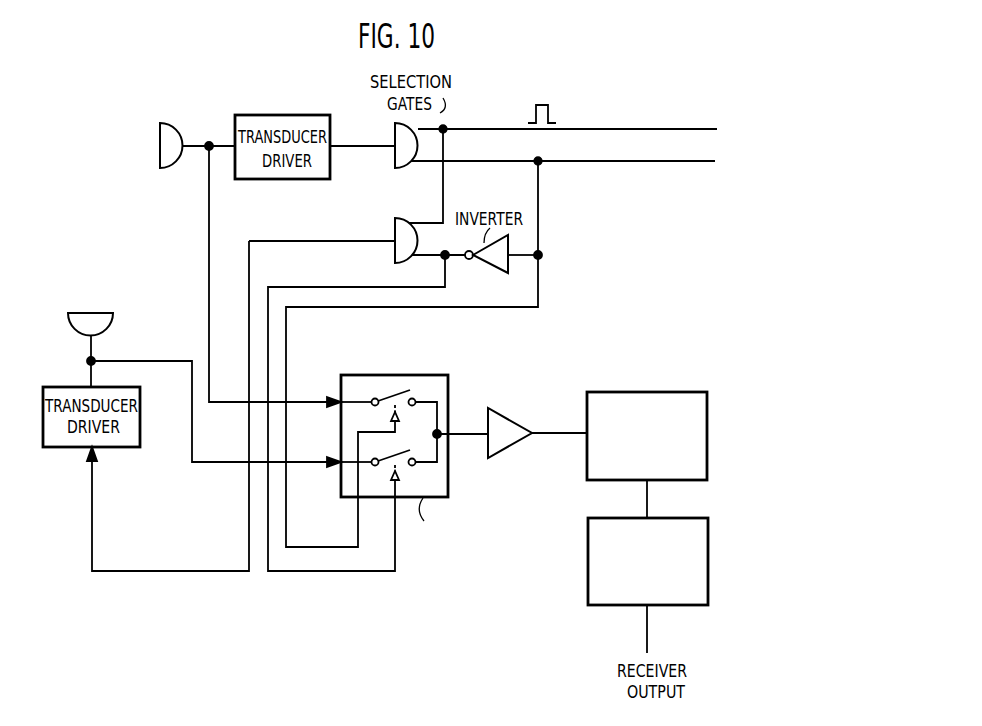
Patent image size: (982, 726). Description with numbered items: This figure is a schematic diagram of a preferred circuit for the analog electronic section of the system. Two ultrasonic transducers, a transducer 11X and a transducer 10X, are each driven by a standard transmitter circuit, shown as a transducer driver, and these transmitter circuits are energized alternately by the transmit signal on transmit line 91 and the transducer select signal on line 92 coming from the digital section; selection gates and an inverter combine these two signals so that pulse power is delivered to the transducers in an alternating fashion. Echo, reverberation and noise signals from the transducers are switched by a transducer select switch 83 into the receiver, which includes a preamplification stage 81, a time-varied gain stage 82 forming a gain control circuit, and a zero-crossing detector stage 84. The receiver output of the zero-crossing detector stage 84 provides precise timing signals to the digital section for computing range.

The transmitting transducer 11X is at (172, 122).
The transducer 10X is at (112, 333).
The transmit line 91 is at (475, 127).
The line 92 is at (477, 159).
The transducer select switch 83 is at (444, 375).
The preamplification stage 81 is at (494, 423).
The time-varied gain stage 82 is at (667, 392).
The zero-crossing detector stage 84 is at (665, 518).